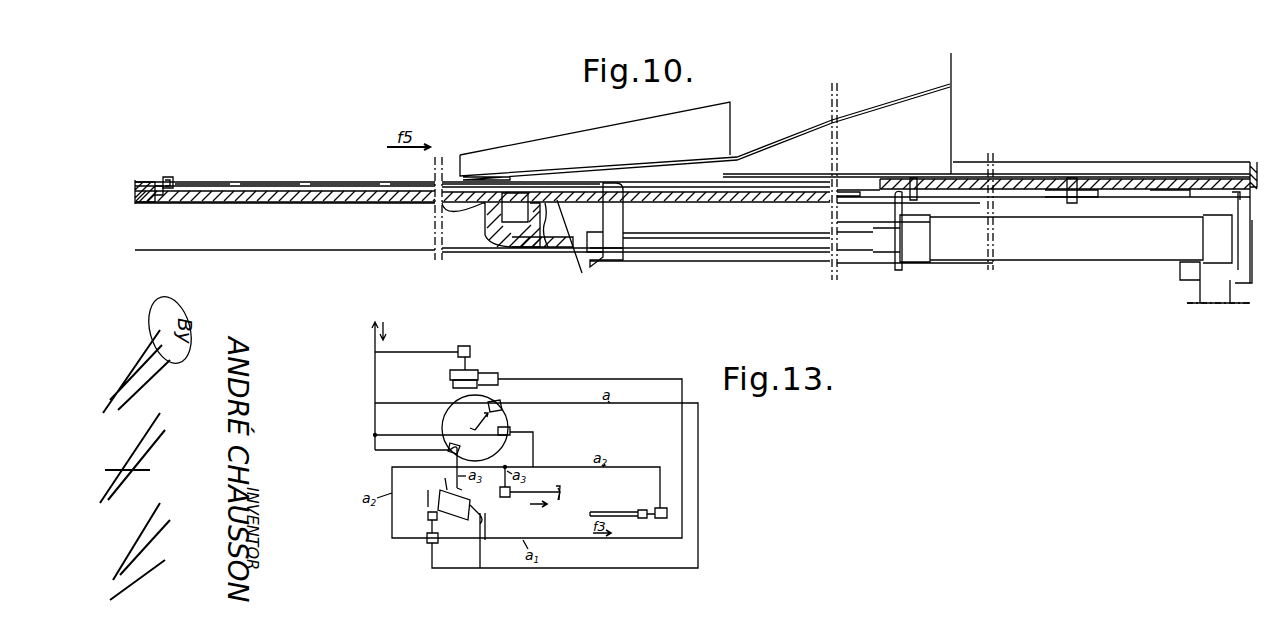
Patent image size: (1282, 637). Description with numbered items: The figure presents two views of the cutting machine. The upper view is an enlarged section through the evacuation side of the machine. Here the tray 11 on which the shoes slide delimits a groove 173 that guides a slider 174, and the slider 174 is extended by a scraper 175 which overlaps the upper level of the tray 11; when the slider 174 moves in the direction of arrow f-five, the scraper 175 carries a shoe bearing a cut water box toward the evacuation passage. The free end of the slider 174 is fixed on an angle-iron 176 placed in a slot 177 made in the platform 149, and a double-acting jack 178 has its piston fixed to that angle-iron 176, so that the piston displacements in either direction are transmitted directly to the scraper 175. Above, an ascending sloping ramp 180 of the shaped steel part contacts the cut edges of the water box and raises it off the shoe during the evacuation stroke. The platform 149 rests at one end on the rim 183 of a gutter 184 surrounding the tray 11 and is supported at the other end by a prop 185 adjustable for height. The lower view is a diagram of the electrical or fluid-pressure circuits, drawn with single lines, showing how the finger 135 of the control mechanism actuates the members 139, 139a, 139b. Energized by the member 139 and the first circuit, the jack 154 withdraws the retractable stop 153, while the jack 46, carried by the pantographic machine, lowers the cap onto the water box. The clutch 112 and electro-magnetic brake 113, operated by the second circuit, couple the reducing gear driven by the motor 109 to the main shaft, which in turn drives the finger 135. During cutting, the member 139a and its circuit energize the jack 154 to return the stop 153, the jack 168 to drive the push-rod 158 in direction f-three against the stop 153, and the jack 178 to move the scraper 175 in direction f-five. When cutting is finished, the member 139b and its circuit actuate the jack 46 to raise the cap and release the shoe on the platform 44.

In FIG. 10, the tray 11 is at (435, 202).
In FIG. 10, the groove 173 is at (165, 203).
In FIG. 10, the slider 174 is at (263, 188).
In FIG. 10, the scraper 175 is at (167, 177).
In FIG. 13, the scraper 175 is at (540, 494).
In FIG. 10, the ascending sloping ramp 180 is at (633, 164).
In FIG. 10, the slot 177 is at (832, 203).
In FIG. 10, the platform 149 is at (1237, 177).
In FIG. 10, the gutter 184 is at (510, 208).
In FIG. 10, the rim 183 is at (523, 242).
In FIG. 10, the angle-iron 176 is at (610, 244).
In FIG. 10, the double-acting jack 178 is at (907, 258).
In FIG. 13, the double-acting jack 178 is at (528, 503).
In FIG. 10, the prop 185 is at (1187, 283).
In FIG. 13, the motor 109 is at (470, 352).
In FIG. 13, the clutch 112 is at (450, 376).
In FIG. 13, the electro-magnetic brake 113 is at (453, 386).
In FIG. 13, the finger 135 is at (485, 418).
In FIG. 13, the member 139 is at (502, 408).
In FIG. 13, the member 139a is at (510, 433).
In FIG. 13, the member 139b is at (450, 447).
In FIG. 13, the platform 44 is at (550, 504).
In FIG. 13, the jack 46 is at (483, 514).
In FIG. 13, the retractable stop 153 is at (427, 515).
In FIG. 13, the jack 154 is at (427, 541).
In FIG. 13, the push-rod 158 is at (642, 510).
In FIG. 13, the jack 168 is at (661, 518).